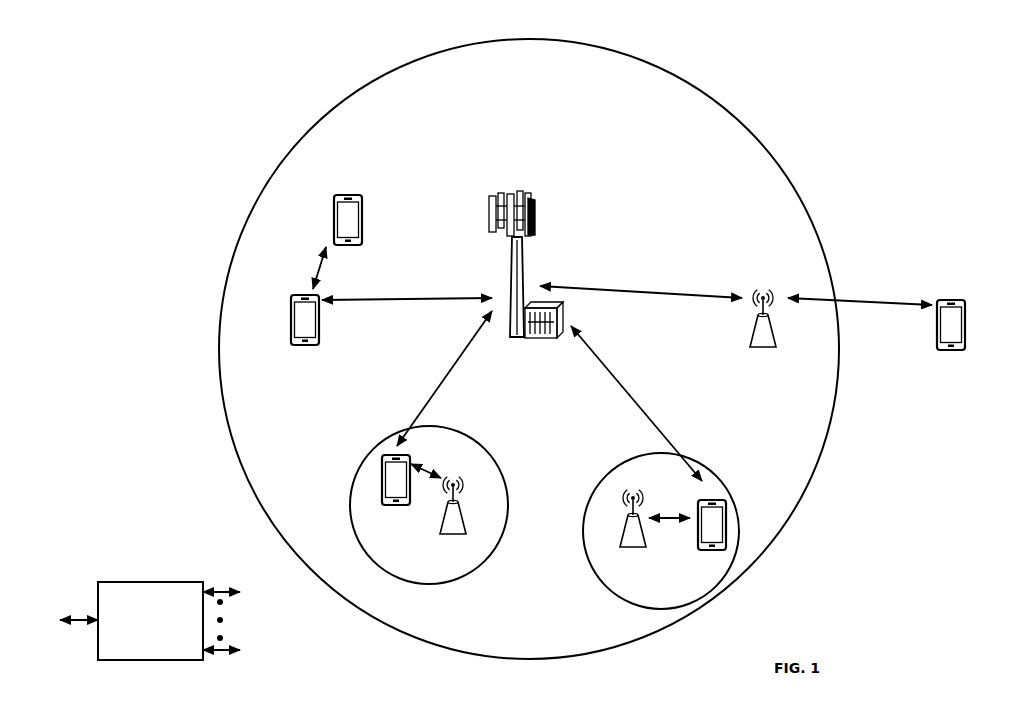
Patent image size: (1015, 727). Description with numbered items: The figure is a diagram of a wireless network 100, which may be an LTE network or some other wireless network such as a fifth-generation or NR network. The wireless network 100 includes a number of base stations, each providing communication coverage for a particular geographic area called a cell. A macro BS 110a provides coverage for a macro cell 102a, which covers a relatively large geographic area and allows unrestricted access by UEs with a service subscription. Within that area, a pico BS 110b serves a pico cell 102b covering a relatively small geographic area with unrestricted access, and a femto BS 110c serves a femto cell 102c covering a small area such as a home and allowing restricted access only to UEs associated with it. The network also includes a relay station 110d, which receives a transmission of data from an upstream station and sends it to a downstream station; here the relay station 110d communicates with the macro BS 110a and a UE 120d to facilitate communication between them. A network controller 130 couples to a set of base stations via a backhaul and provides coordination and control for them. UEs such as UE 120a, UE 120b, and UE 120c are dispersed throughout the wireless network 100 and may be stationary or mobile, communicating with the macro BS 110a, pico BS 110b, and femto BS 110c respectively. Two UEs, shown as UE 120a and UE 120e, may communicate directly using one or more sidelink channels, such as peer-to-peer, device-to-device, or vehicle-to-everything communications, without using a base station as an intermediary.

The wireless network 100 is at (139, 35).
The macro cell 102a is at (737, 116).
The pico cell 102b is at (494, 455).
The femto cell 102c is at (607, 475).
The macro BS 110a is at (523, 190).
The pico BS 110b is at (466, 520).
The femto BS 110c is at (622, 540).
The relay station 110d is at (763, 290).
The UE 120a is at (292, 318).
The UE 120b is at (390, 507).
The UE 120c is at (702, 550).
The UE 120d is at (960, 300).
The UE 120e is at (335, 207).
The network controller 130 is at (149, 582).